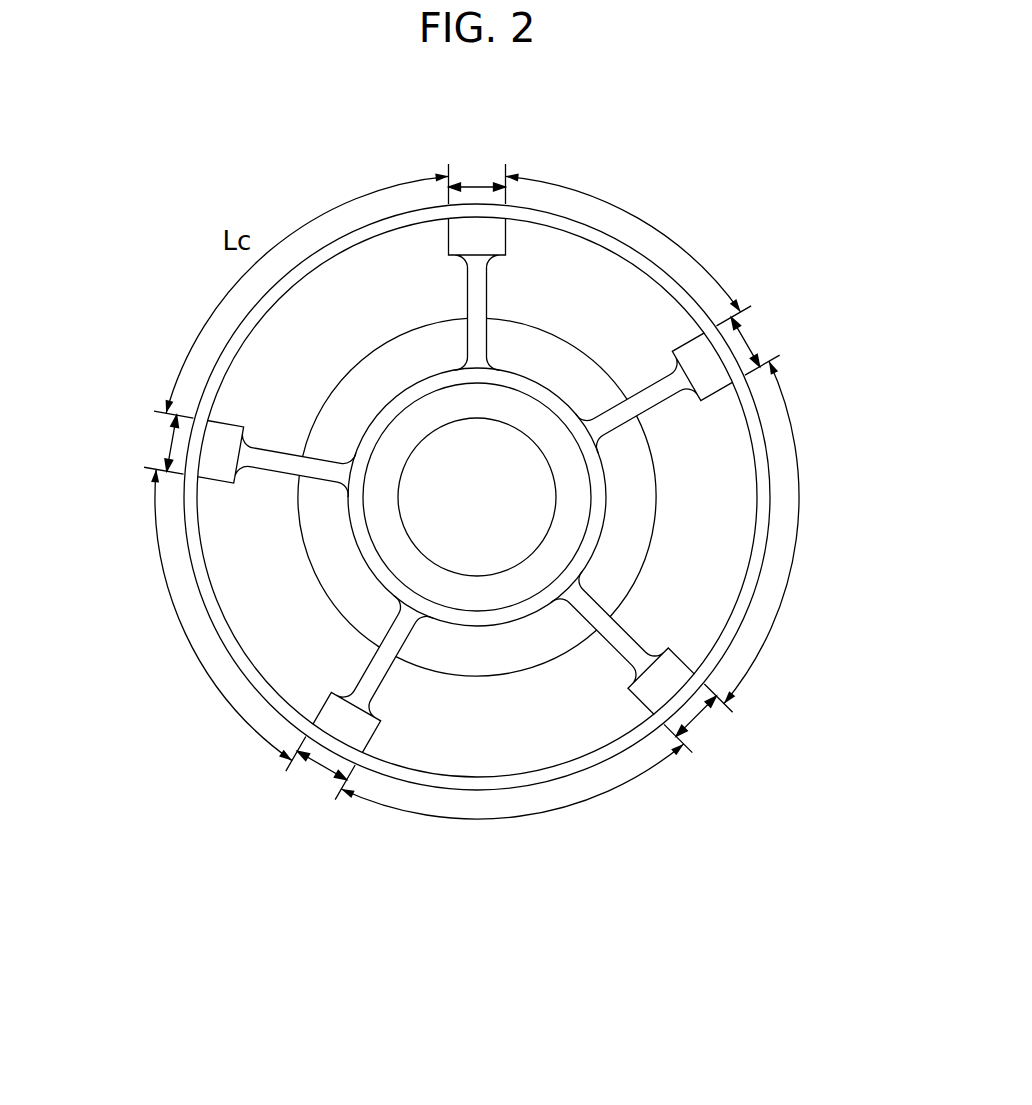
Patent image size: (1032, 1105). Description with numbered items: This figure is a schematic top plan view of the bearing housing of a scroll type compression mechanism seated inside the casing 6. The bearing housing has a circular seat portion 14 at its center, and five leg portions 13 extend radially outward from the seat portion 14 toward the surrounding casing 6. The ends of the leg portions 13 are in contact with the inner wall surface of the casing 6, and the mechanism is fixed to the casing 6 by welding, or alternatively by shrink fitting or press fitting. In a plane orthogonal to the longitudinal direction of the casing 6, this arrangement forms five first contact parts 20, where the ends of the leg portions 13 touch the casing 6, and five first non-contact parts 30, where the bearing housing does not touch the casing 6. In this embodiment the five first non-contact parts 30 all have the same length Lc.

The casing 6 is at (284, 304).
The leg portions 13 is at (475, 284).
The circular seat portion 14 is at (522, 412).
The first contact parts 20 is at (481, 187).
The first non-contact parts 30 is at (323, 205).